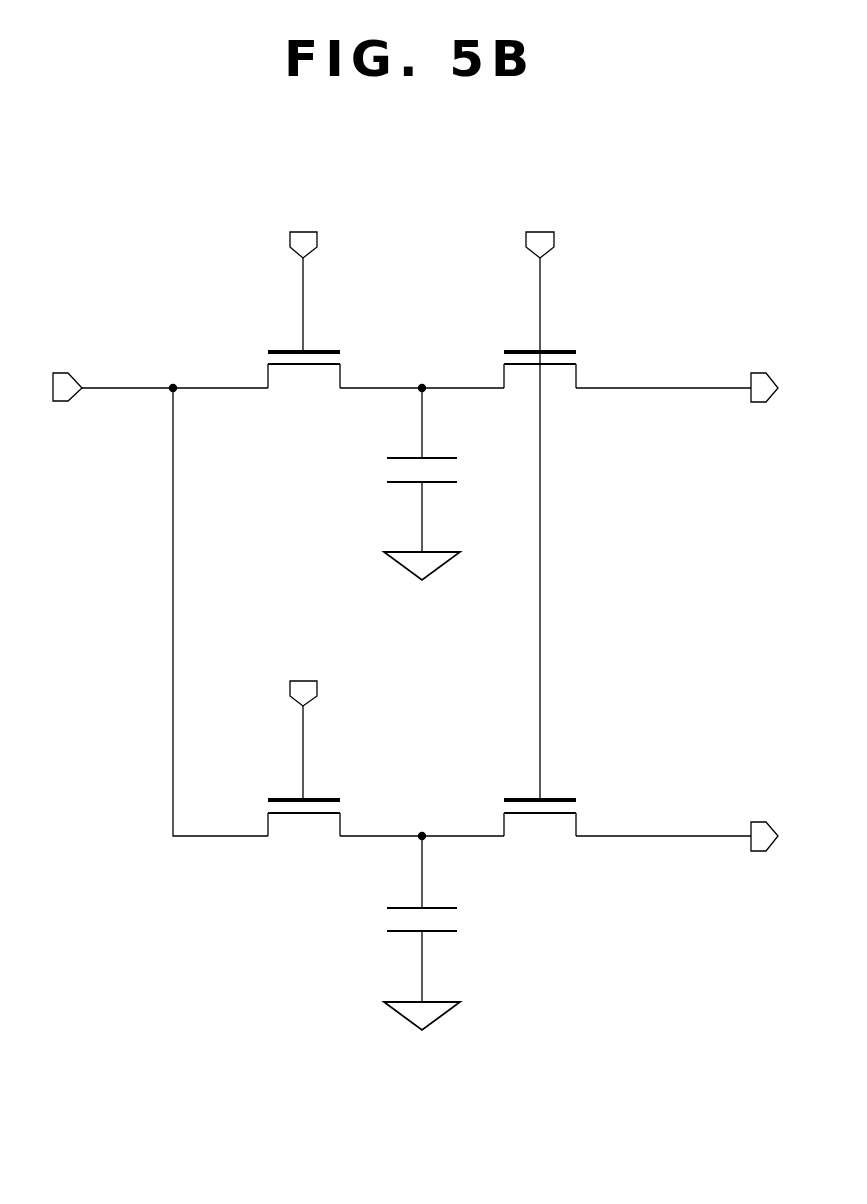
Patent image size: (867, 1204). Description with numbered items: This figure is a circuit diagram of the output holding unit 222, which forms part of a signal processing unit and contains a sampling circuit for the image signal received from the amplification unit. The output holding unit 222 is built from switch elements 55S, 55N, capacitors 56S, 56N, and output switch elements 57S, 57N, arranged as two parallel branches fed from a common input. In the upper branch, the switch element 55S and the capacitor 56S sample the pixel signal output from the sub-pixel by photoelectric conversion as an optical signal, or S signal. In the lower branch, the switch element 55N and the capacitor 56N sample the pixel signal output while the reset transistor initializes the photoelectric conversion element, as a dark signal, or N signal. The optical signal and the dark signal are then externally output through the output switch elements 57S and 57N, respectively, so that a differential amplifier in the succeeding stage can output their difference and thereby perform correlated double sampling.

The output holding unit 222 is at (98, 190).
The switch element 55S is at (276, 345).
The output switch element 57S is at (515, 345).
The capacitor 56S is at (375, 476).
The switch element 55N is at (276, 793).
The output switch element 57N is at (515, 793).
The capacitor 56N is at (375, 919).